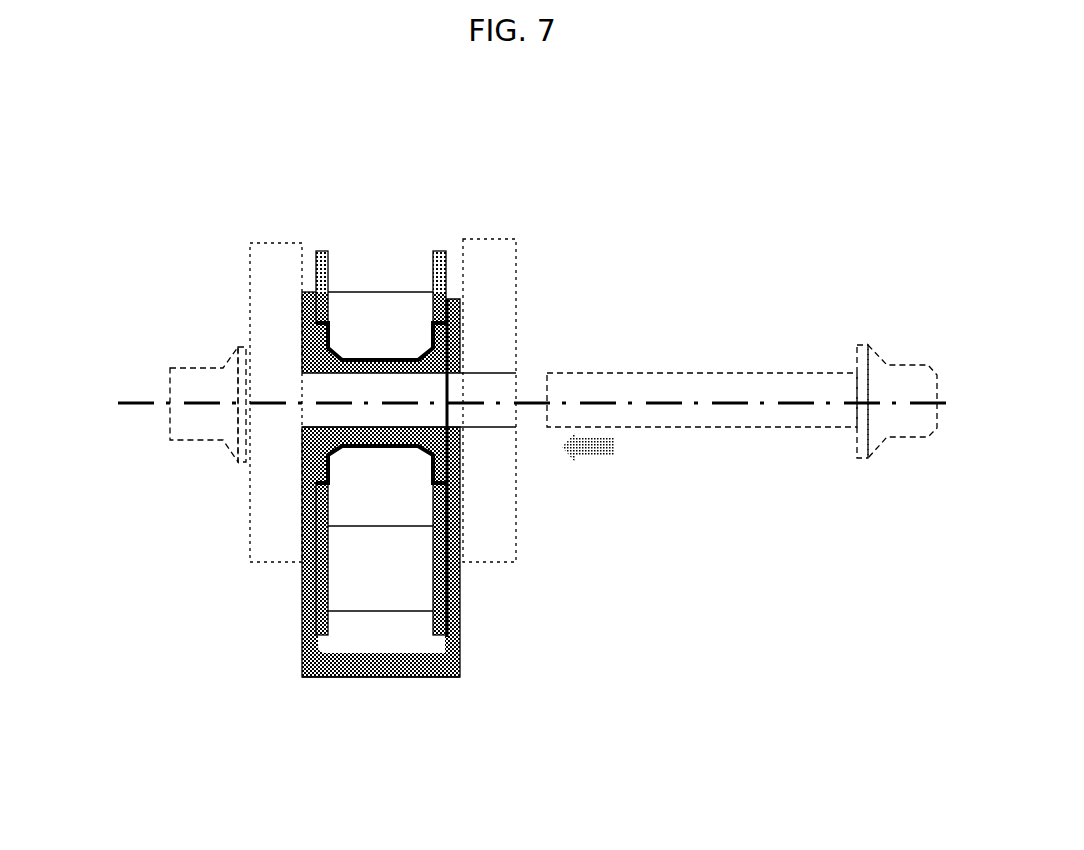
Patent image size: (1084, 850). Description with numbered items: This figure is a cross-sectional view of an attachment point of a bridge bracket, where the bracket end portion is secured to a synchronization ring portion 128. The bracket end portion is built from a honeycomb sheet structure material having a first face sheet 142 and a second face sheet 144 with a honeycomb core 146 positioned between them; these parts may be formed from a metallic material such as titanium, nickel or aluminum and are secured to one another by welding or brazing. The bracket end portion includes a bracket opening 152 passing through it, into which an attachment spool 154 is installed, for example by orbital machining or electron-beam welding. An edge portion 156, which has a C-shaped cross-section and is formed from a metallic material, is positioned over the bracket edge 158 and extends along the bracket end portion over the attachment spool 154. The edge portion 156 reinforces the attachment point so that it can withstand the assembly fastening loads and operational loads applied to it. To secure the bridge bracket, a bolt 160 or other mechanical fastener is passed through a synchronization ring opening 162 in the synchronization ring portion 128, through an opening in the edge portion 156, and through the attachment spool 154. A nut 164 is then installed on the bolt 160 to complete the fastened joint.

The synchronization ring portion 128 is at (272, 522).
The first face sheet 142 is at (311, 291).
The second face sheet 144 is at (447, 502).
The honeycomb core 146 is at (409, 604).
The bracket opening 152 is at (451, 300).
The attachment spool 154 is at (457, 357).
The edge portion 156 is at (328, 678).
The bracket edge 158 is at (303, 650).
The bolt 160 is at (766, 432).
The synchronization ring opening 162 is at (498, 377).
The nut 164 is at (175, 366).